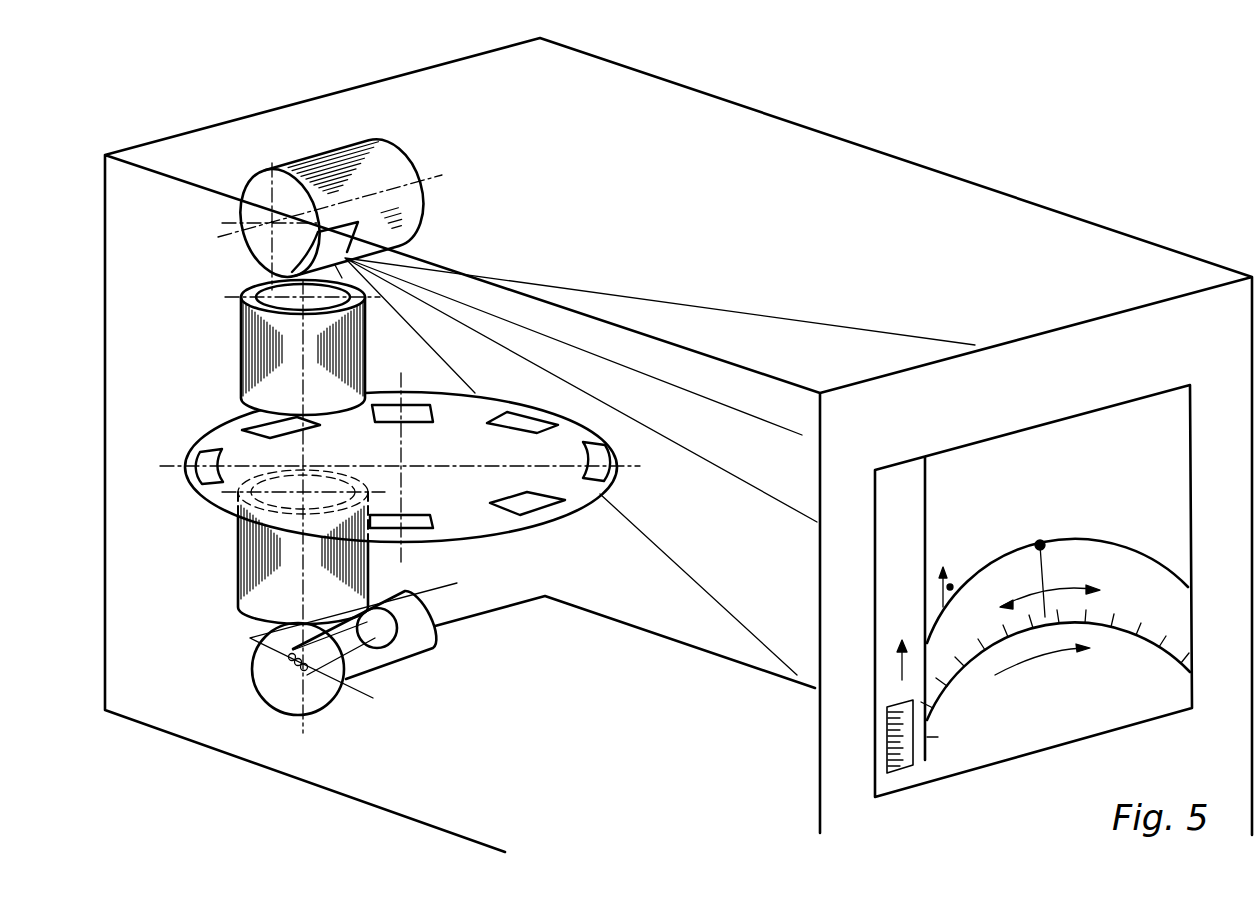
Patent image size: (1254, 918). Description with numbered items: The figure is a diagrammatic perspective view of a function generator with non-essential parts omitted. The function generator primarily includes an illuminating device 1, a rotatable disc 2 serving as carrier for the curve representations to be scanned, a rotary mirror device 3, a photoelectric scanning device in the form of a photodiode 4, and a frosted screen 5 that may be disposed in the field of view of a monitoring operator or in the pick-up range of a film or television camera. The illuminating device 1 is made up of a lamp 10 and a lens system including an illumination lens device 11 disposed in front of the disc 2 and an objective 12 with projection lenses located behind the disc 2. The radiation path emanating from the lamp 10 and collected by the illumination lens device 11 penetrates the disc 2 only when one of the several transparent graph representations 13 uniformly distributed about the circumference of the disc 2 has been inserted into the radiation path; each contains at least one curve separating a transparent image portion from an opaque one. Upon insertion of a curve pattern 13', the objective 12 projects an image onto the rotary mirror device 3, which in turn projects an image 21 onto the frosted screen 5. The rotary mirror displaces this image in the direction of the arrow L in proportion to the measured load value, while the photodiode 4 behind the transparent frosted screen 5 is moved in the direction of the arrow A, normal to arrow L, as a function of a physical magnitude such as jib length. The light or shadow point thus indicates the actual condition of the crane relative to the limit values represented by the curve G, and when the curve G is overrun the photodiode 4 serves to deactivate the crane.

The illuminating device 1 is at (298, 712).
The rotatable disc 2 is at (488, 397).
The rotary mirror device 3 is at (390, 205).
The photodiode 4 is at (1040, 543).
The frosted screen 5 is at (1002, 353).
The lamp 10 is at (353, 675).
The illumination lens device 11 is at (240, 555).
The objective 12 is at (240, 358).
The transparent graph representations 13 is at (403, 484).
The curve pattern 13' is at (231, 434).
The image 21 is at (1033, 582).
The curve G is at (1096, 534).
The arrow A is at (1060, 559).
The arrow L is at (950, 585).